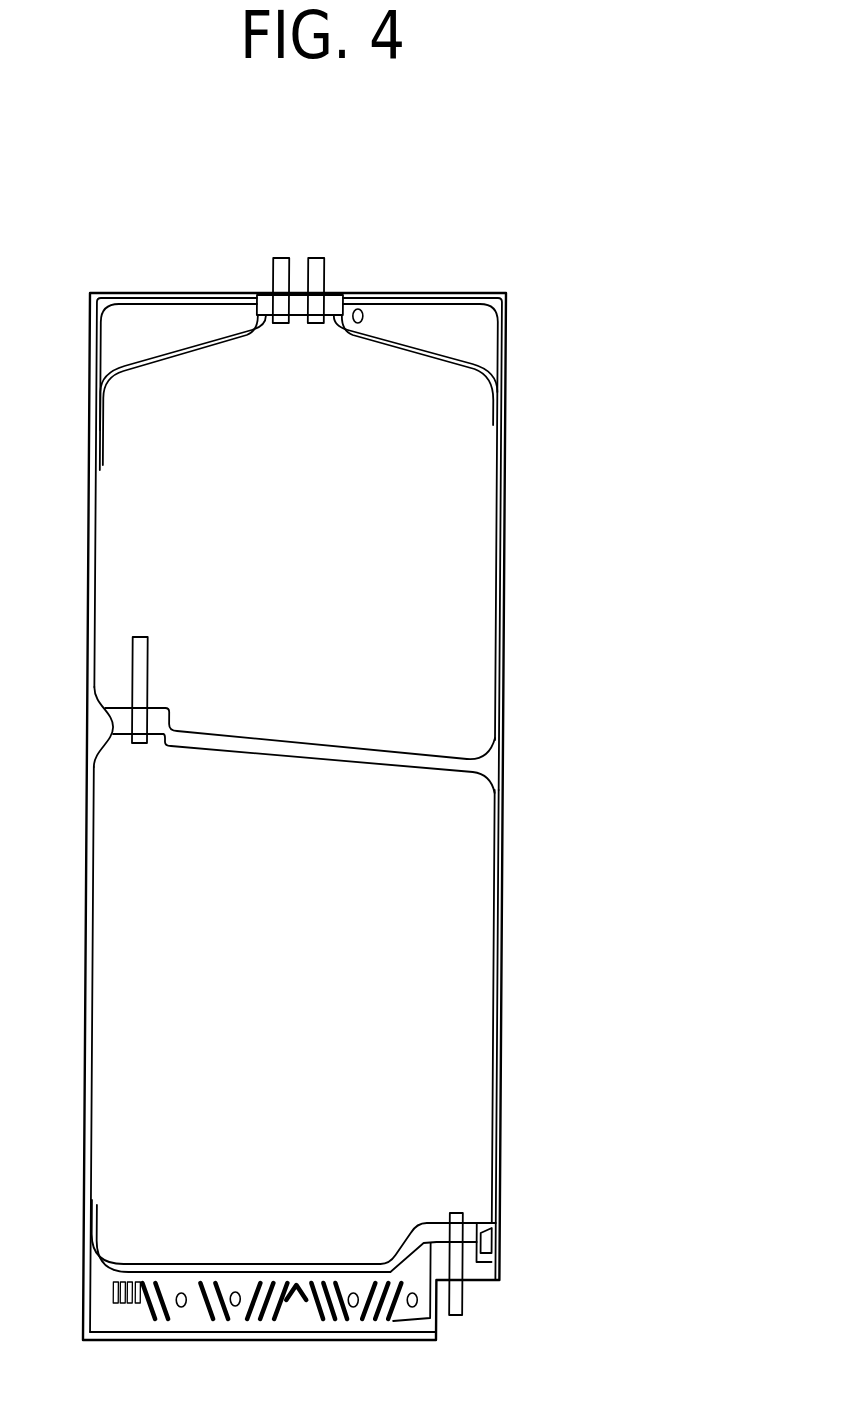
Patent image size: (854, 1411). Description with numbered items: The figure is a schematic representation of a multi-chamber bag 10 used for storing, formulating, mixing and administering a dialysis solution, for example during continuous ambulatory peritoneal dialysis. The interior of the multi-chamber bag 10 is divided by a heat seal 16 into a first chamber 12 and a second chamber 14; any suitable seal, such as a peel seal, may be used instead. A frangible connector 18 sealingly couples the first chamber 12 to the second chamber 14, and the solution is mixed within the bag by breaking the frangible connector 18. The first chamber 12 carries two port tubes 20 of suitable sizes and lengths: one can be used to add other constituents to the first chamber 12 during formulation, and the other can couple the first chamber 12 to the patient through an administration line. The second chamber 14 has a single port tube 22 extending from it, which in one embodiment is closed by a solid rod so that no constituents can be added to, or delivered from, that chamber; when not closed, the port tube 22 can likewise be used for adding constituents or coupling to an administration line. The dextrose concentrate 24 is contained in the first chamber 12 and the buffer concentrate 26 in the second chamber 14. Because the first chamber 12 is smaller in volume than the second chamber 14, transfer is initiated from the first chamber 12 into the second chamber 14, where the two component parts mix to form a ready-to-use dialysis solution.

The multi-chamber bag 10 is at (604, 567).
The first chamber 12 is at (462, 498).
The second chamber 14 is at (462, 968).
The heat seal 16 is at (413, 753).
The frangible connector 18 is at (140, 721).
The port tubes 20 is at (281, 258).
The port tube 22 is at (464, 1300).
The dextrose concentrate 24 is at (313, 548).
The buffer concentrate 26 is at (312, 1019).